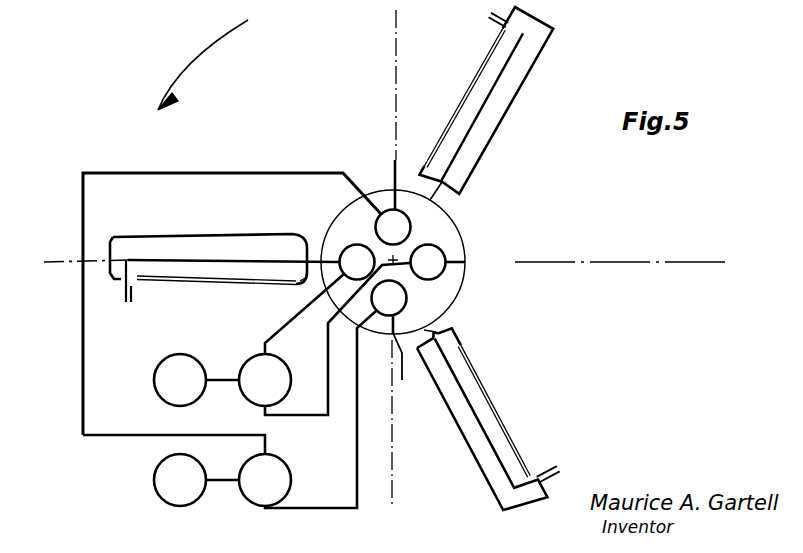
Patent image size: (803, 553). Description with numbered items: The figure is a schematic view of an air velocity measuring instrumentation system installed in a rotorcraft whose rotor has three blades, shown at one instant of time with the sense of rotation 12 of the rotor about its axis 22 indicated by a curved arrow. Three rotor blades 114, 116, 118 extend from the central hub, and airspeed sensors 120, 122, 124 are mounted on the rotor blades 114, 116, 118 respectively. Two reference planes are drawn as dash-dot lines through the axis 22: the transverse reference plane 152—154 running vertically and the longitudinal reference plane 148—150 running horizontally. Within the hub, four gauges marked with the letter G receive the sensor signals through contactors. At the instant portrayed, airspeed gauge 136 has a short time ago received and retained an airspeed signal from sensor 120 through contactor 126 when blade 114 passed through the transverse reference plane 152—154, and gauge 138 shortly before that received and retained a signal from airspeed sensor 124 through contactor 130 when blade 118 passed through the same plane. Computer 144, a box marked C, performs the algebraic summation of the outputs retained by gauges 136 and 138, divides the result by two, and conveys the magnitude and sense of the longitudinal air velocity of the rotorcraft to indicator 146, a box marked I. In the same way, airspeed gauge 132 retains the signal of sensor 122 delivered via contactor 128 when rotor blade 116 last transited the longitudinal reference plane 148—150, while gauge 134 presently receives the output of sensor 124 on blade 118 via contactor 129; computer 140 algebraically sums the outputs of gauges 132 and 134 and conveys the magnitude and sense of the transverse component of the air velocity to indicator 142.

The sense of rotation 12 is at (210, 46).
The axis 22 is at (397, 250).
The rotor blade 114 is at (517, 407).
The rotor blade 116 is at (510, 108).
The rotor blade 118 is at (196, 238).
The airspeed sensor 120 is at (563, 460).
The airspeed sensor 122 is at (493, 25).
The airspeed sensor 124 is at (134, 290).
The contactor 126 is at (412, 361).
The contactor 128 is at (465, 262).
The contactor 129 is at (309, 272).
The contactor 130 is at (398, 178).
The airspeed gauge 132 is at (441, 250).
The airspeed gauge 134 is at (346, 249).
The airspeed gauge 136 is at (407, 297).
The airspeed gauge 138 is at (384, 211).
The computer 140 is at (283, 358).
The indicator 142 is at (197, 357).
The computer 144 is at (291, 480).
The indicator 146 is at (154, 480).
The longitudinal reference plane 148 is at (727, 262).
The longitudinal reference plane 150 is at (50, 262).
The transverse reference plane 152 is at (392, 510).
The transverse reference plane 154 is at (395, 50).